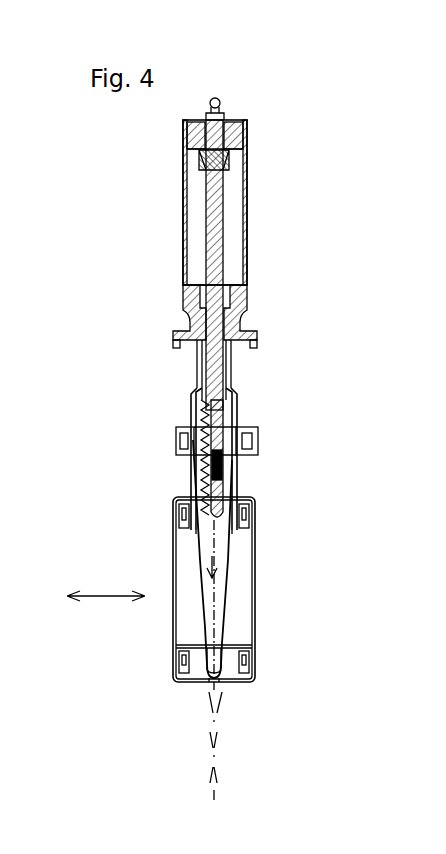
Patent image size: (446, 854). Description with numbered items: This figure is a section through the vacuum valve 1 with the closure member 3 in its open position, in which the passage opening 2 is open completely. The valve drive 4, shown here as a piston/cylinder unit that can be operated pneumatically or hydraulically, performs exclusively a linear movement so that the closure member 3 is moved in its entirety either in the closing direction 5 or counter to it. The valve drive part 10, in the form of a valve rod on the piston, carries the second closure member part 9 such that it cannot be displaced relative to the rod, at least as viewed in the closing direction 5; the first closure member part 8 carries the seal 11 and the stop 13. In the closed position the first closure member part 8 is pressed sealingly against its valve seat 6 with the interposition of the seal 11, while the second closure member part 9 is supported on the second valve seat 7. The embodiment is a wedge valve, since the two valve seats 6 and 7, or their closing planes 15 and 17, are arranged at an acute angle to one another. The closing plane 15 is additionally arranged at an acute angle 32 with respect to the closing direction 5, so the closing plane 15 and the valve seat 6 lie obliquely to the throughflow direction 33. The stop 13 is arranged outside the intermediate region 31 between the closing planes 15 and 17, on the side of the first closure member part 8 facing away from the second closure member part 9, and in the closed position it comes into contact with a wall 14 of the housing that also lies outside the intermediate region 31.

The vacuum valve 1 is at (262, 137).
The passage opening 2 is at (216, 588).
The closure member 3 is at (173, 448).
The valve drive 4 is at (233, 215).
The closing direction 5 is at (218, 565).
The valve seat 6 is at (187, 527).
The second valve seat 7 is at (231, 531).
The first closure member part 8 is at (187, 474).
The second closure member part 9 is at (243, 412).
The valve drive part 10 is at (237, 363).
The seal 11 is at (188, 402).
The stop 13 is at (173, 503).
The wall 14 is at (207, 645).
The closing plane 15 is at (187, 405).
The closing plane 17 is at (238, 495).
The intermediate region 31 is at (231, 551).
The acute angle 32 is at (205, 658).
The throughflow direction 33 is at (105, 598).